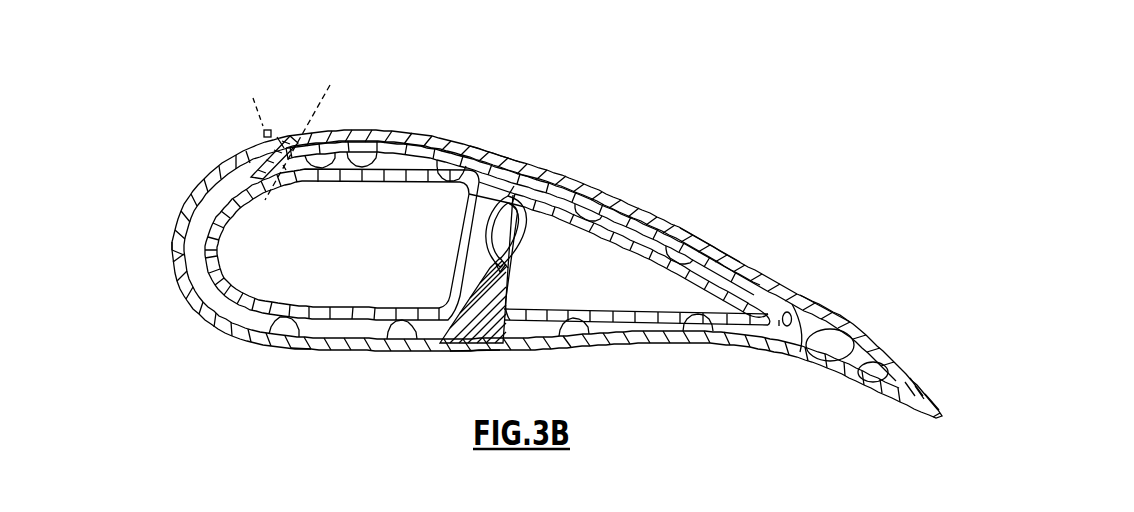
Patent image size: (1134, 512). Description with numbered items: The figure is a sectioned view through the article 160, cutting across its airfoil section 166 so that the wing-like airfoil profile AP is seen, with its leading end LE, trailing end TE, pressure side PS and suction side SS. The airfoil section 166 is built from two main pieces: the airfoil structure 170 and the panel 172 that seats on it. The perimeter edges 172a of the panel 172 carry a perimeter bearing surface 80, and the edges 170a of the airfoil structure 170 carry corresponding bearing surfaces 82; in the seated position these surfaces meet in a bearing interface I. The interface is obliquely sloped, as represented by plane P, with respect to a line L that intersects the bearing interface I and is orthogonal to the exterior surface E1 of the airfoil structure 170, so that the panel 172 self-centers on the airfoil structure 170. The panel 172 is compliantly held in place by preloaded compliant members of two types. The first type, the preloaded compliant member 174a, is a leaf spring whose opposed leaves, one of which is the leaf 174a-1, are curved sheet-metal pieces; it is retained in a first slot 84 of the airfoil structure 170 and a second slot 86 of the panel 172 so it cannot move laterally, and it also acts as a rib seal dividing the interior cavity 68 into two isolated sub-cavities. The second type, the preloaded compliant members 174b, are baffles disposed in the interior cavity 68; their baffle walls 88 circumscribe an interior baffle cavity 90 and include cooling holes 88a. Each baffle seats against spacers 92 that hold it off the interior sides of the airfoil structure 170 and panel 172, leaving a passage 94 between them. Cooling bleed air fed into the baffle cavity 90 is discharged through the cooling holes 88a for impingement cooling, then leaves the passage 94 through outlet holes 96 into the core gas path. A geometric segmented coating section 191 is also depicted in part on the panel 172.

The article 160 is at (230, 372).
The airfoil structure 170 is at (210, 165).
The edges of the airfoil structure 170a is at (834, 302).
The outlet holes 96 is at (221, 165).
The airfoil section 166 is at (300, 358).
The spacers 92 is at (352, 170).
The passage 94 is at (430, 155).
The baffle walls 88 is at (217, 244).
The cooling holes 88a is at (220, 226).
The interior baffle cavity 90 is at (373, 287).
The first slot 84 is at (485, 262).
The second slot 86 is at (528, 196).
The interior cavity 68 is at (378, 200).
The perimeter bearing surface 80 is at (830, 297).
The bearing surfaces 82 is at (780, 302).
The panel 172 is at (584, 175).
The perimeter edges of the panel 172a is at (772, 330).
The preloaded compliant member 174a is at (620, 222).
The leaf 174a-1 is at (566, 266).
The preloaded compliant members 174b is at (408, 170).
The geometric segmented coating section 191 is at (563, 168).
The exterior surface E1 is at (262, 143).
The line L is at (268, 129).
The plane P is at (316, 108).
The bearing interface I is at (288, 165).
The suction side SS is at (510, 140).
The pressure side PS is at (473, 368).
The leading end LE is at (168, 285).
The trailing end TE is at (897, 425).
The airfoil profile AP is at (688, 232).